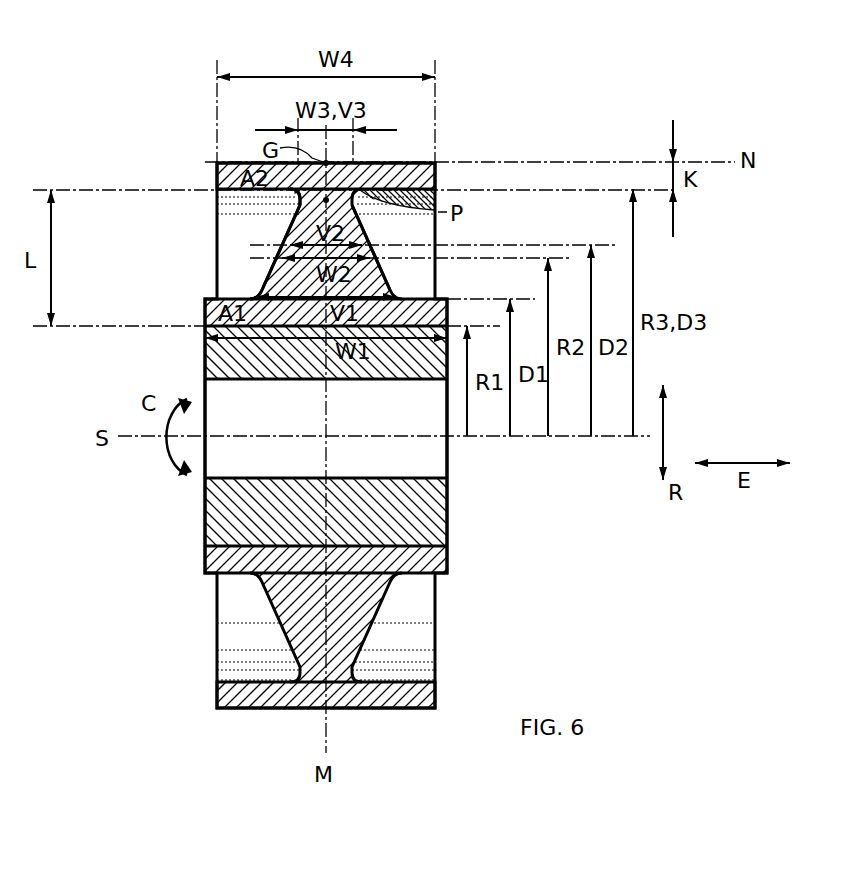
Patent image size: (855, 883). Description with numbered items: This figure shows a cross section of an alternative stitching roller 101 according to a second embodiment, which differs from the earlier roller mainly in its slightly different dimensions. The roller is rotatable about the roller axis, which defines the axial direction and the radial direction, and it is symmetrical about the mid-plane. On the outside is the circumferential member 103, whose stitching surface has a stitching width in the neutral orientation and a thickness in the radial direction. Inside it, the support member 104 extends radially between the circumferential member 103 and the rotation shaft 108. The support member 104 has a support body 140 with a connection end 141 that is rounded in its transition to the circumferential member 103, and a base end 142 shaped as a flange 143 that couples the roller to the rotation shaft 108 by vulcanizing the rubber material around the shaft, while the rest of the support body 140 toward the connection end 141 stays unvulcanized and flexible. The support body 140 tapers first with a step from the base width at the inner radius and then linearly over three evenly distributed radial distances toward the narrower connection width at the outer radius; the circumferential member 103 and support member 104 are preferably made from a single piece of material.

The alternative stitching roller 101 is at (130, 85).
The circumferential member 103 is at (427, 162).
The support member 104 is at (289, 232).
The rotation shaft 108 is at (205, 358).
The support body 140 is at (272, 268).
The connection end 141 is at (297, 197).
The base end 142 is at (258, 293).
The flange 143 is at (441, 296).